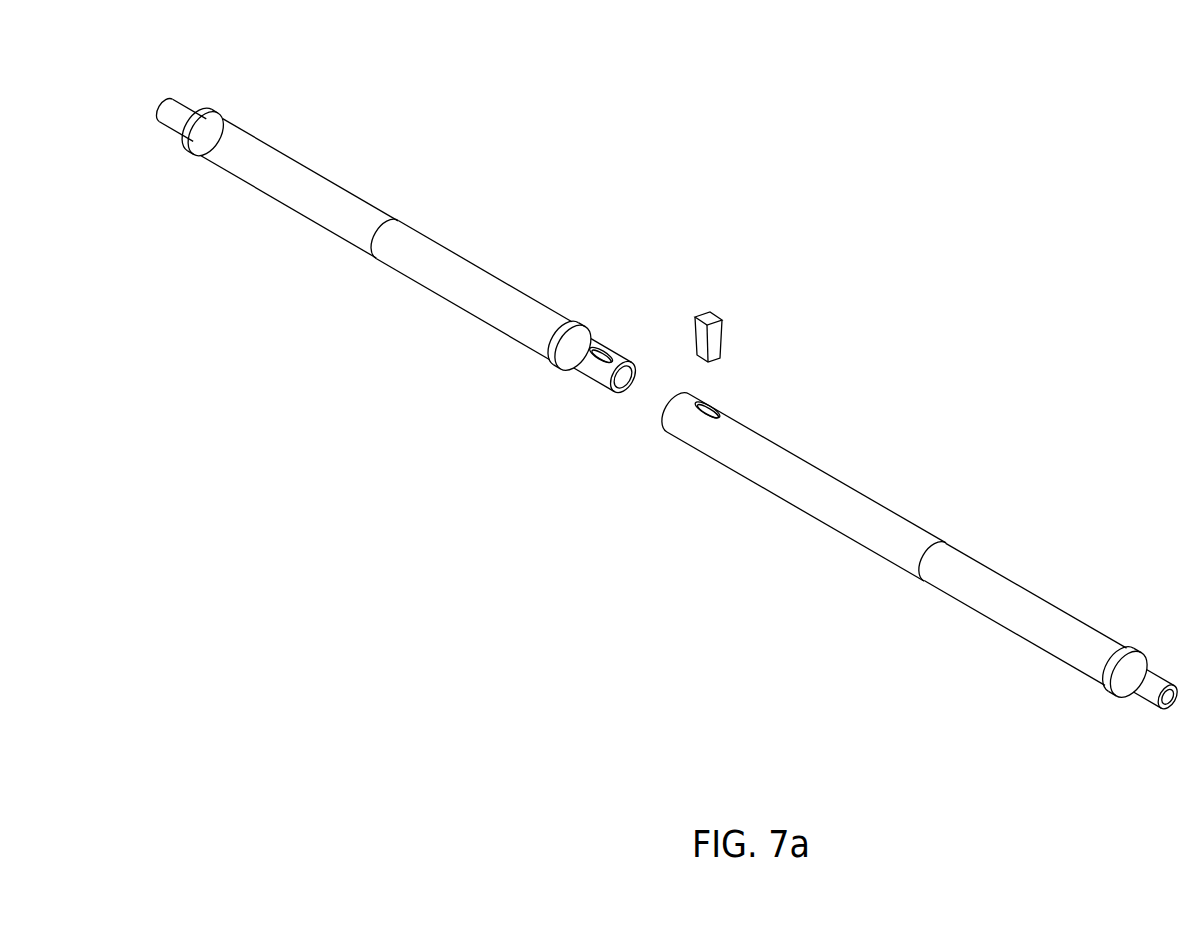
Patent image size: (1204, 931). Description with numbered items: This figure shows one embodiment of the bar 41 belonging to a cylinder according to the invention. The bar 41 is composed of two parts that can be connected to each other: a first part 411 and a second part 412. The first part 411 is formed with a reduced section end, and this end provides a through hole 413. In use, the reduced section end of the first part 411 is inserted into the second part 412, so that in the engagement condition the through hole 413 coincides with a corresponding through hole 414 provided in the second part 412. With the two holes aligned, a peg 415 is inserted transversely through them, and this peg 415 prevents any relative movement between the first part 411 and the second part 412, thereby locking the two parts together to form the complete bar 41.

The bar 41 is at (667, 377).
The first part 411 is at (340, 210).
The second part 412 is at (1060, 623).
The through hole 413 is at (611, 347).
The through hole 414 is at (717, 407).
The peg 415 is at (699, 318).